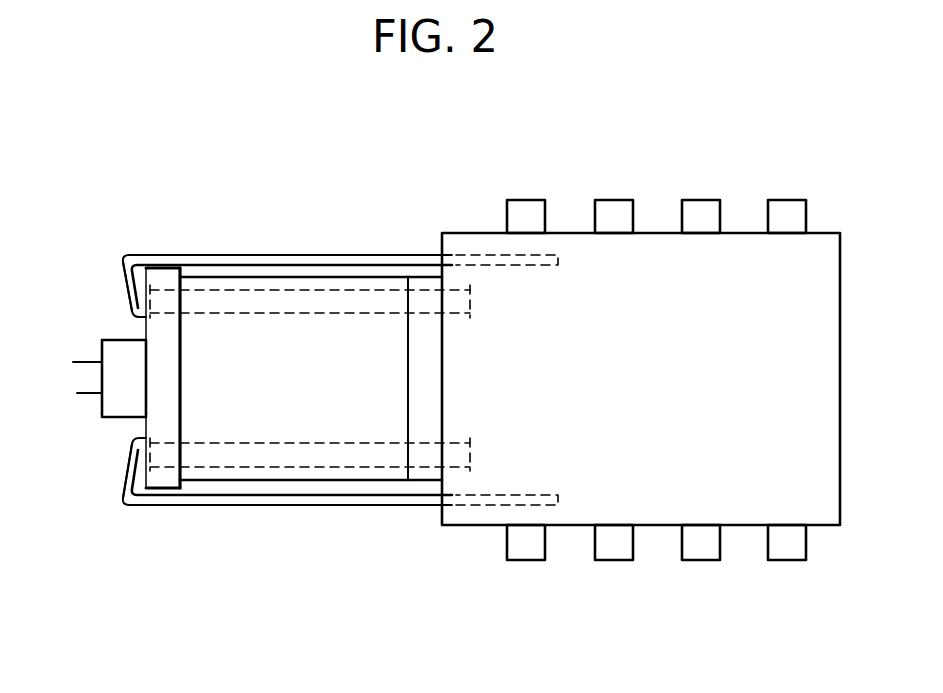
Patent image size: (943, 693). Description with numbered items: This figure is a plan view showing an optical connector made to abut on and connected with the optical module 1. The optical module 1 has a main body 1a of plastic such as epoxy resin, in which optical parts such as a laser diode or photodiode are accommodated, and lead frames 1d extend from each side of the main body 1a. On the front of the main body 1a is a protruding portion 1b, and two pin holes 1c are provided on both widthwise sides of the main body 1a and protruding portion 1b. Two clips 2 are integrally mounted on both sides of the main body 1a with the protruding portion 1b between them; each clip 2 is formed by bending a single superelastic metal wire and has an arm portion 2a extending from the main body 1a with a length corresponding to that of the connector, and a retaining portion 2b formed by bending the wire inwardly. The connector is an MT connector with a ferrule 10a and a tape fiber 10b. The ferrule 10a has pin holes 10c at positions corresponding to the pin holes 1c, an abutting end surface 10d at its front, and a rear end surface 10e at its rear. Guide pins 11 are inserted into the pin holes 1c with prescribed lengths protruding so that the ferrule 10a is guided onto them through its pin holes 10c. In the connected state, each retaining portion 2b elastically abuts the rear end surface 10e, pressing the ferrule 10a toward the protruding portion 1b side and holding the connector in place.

The optical module 1 is at (624, 374).
The main body 1a is at (738, 500).
The protruding portion 1b is at (425, 430).
The pin holes 1c is at (430, 277).
The lead frames 1d is at (773, 208).
The clip 2 is at (297, 365).
The arm portion 2a is at (303, 274).
The retaining portion 2b is at (128, 277).
The ferrule 10a is at (222, 415).
The tape fiber 10b is at (76, 355).
The pin holes 10c is at (232, 300).
The abutting end surface 10d is at (415, 400).
The rear end surface 10e is at (142, 322).
The guide pins 11 is at (267, 300).